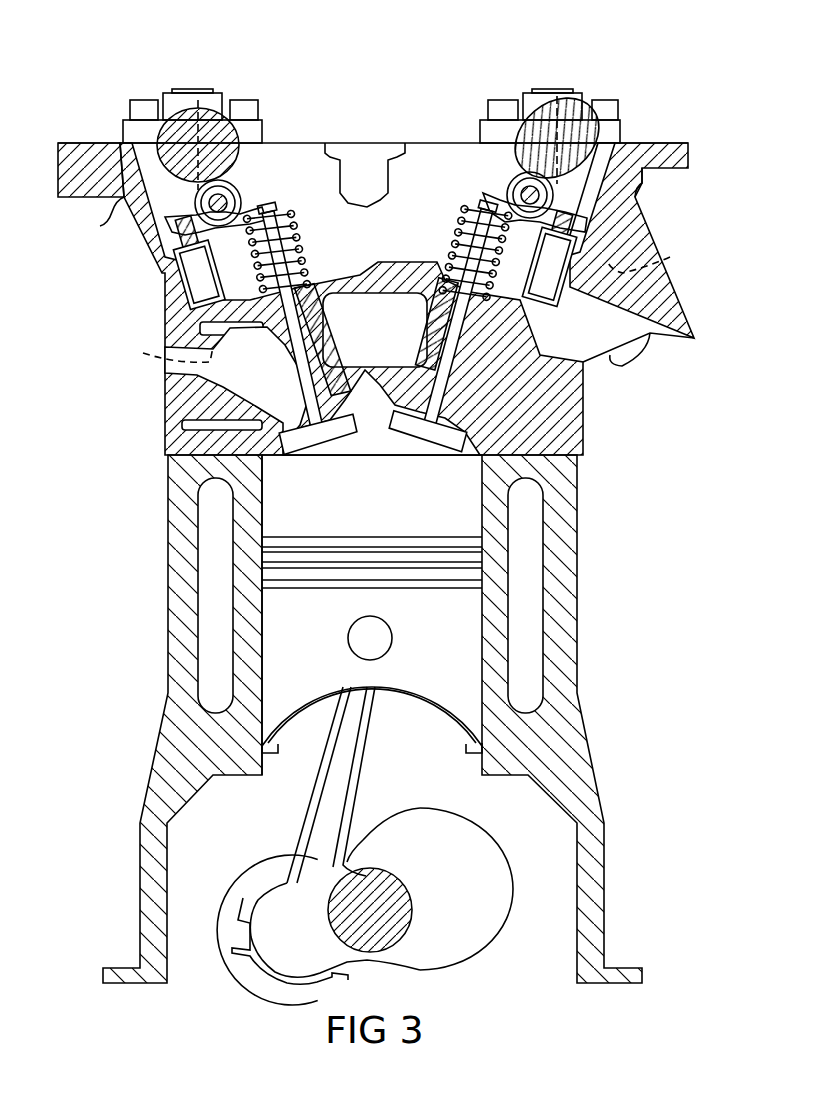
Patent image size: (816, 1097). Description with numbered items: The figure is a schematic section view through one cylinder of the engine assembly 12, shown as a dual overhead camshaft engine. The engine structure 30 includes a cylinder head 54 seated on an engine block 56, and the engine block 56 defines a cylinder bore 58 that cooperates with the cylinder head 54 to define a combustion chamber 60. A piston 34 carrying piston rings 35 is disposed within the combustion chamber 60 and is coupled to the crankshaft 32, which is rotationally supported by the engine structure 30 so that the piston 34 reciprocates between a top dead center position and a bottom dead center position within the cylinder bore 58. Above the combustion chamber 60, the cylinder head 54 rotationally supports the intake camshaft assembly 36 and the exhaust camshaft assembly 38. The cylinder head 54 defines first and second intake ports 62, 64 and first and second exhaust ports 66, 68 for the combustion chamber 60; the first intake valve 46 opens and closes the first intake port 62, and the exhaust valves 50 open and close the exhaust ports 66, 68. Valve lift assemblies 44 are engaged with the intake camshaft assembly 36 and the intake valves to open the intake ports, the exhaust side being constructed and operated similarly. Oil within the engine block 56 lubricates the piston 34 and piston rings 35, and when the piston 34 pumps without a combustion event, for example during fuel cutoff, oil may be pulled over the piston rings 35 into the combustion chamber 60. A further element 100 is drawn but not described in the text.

The engine assembly 12 is at (86, 70).
The engine structure 30 is at (376, 695).
The crankshaft 32 is at (468, 962).
The pistons 34 is at (368, 604).
The piston rings 35 is at (262, 583).
The intake camshaft assembly 36 is at (603, 100).
The exhaust camshaft assembly 38 is at (176, 100).
The valve lift assemblies 44 is at (118, 198).
The first intake valves 46 is at (452, 235).
The exhaust valves 50 is at (293, 242).
The cylinder head 54 is at (90, 157).
The engine block 56 is at (172, 627).
The cylinder bores 58 is at (260, 490).
The combustion chambers 60 is at (383, 493).
The first intake ports 62 is at (657, 273).
The second intake ports 64 is at (653, 261).
The first exhaust ports 66 is at (197, 375).
The second exhaust ports 68 is at (165, 353).
The hydraulic lash adjuster 100 is at (180, 288).